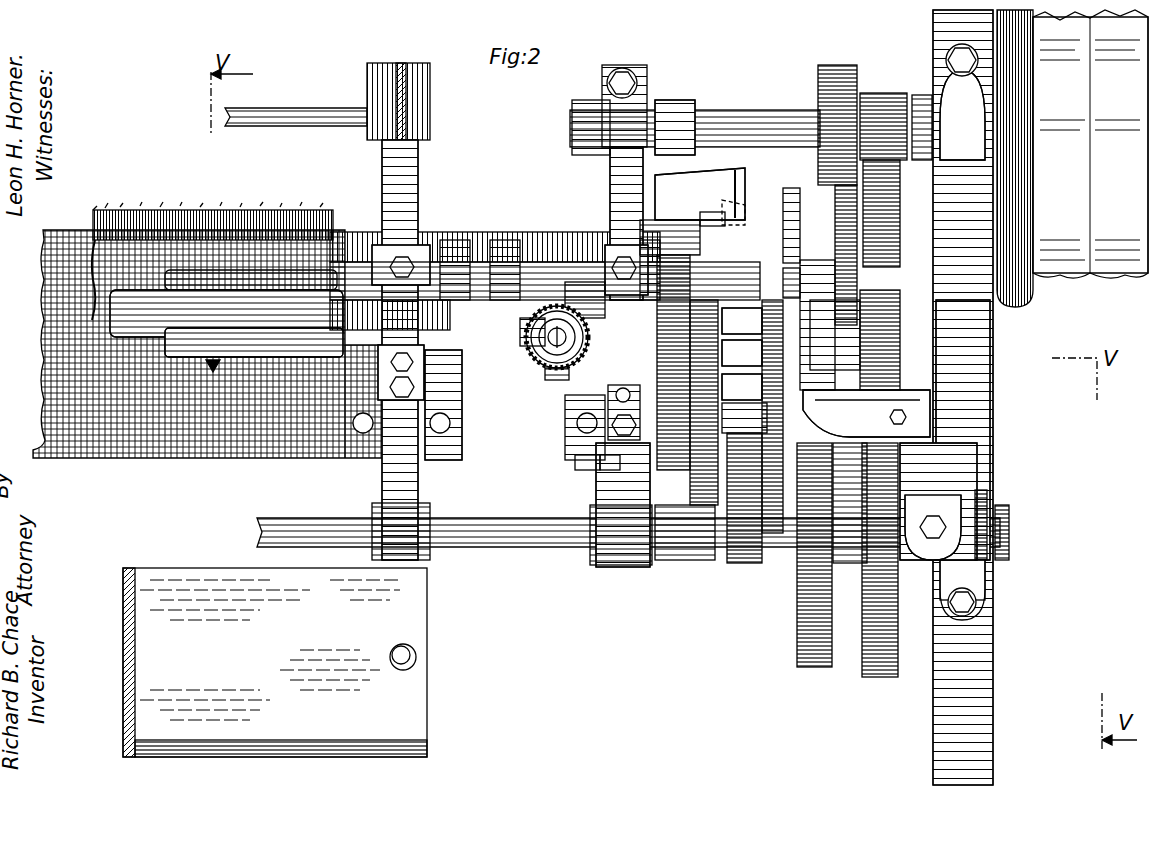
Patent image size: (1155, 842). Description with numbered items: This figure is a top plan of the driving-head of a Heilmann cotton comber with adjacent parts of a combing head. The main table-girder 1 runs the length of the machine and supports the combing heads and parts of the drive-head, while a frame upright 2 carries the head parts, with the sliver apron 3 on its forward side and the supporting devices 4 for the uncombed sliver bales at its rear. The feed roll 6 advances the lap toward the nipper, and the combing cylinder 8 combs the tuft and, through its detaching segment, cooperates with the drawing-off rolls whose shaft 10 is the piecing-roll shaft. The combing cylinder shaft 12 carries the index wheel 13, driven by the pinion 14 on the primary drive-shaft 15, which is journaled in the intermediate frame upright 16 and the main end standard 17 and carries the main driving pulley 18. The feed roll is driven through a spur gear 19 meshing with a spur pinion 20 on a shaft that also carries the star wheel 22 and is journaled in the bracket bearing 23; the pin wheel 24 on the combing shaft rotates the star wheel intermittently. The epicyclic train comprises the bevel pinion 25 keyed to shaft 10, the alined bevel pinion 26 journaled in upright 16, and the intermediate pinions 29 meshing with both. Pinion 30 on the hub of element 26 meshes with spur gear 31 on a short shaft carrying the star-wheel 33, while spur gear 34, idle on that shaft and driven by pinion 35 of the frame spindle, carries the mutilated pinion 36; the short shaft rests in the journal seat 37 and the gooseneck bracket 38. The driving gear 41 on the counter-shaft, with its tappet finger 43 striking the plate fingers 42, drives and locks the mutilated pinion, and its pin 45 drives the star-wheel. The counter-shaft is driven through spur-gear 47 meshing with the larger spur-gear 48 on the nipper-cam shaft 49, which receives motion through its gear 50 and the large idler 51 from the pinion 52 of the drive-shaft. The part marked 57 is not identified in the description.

The main table-girder 1 is at (248, 460).
The frame upright 2 is at (382, 484).
The sliver apron 3 is at (418, 650).
The supporting devices 4 is at (288, 108).
The feed roll 6 is at (168, 280).
The combing cylinder 8 is at (45, 292).
The drawing-off roll shaft 10 is at (445, 357).
The combing cylinder shaft 12 is at (448, 240).
The index wheel 13 is at (836, 263).
The pinion 14 is at (816, 85).
The primary drive-shaft 15 is at (700, 110).
The intermediate frame upright 16 is at (640, 70).
The main end standard 17 is at (993, 392).
The main driving pulley 18 is at (1023, 150).
The spur gear 19 is at (722, 212).
The spur pinion 20 is at (732, 200).
The star wheel 22 is at (792, 186).
The bracket bearing 23 is at (700, 194).
The pin wheel 24 is at (791, 283).
The bevel pinion 25 is at (530, 330).
The bevel pinion 26 is at (583, 307).
The intermediate pinion 29 is at (545, 308).
The pinion 30 is at (650, 263).
The spur gear 31 is at (577, 463).
The star-wheel 33 is at (682, 550).
The spur gear 34 is at (606, 463).
The pinion 35 is at (742, 321).
The mutilated pinion 36 is at (742, 387).
The journal seat 37 is at (630, 412).
The gooseneck bracket 38 is at (866, 413).
The driving gear 41 is at (744, 483).
The plate fingers 42 is at (742, 353).
The tappet finger 43 is at (673, 405).
The pin 45 is at (775, 497).
The spur-gear 47 is at (817, 477).
The spur-gear 48 is at (812, 668).
The nipper-cam shaft 49 is at (527, 550).
The gear 50 is at (880, 678).
The large idler 51 is at (900, 210).
The pinion 52 is at (880, 93).
The gear 57 is at (885, 350).